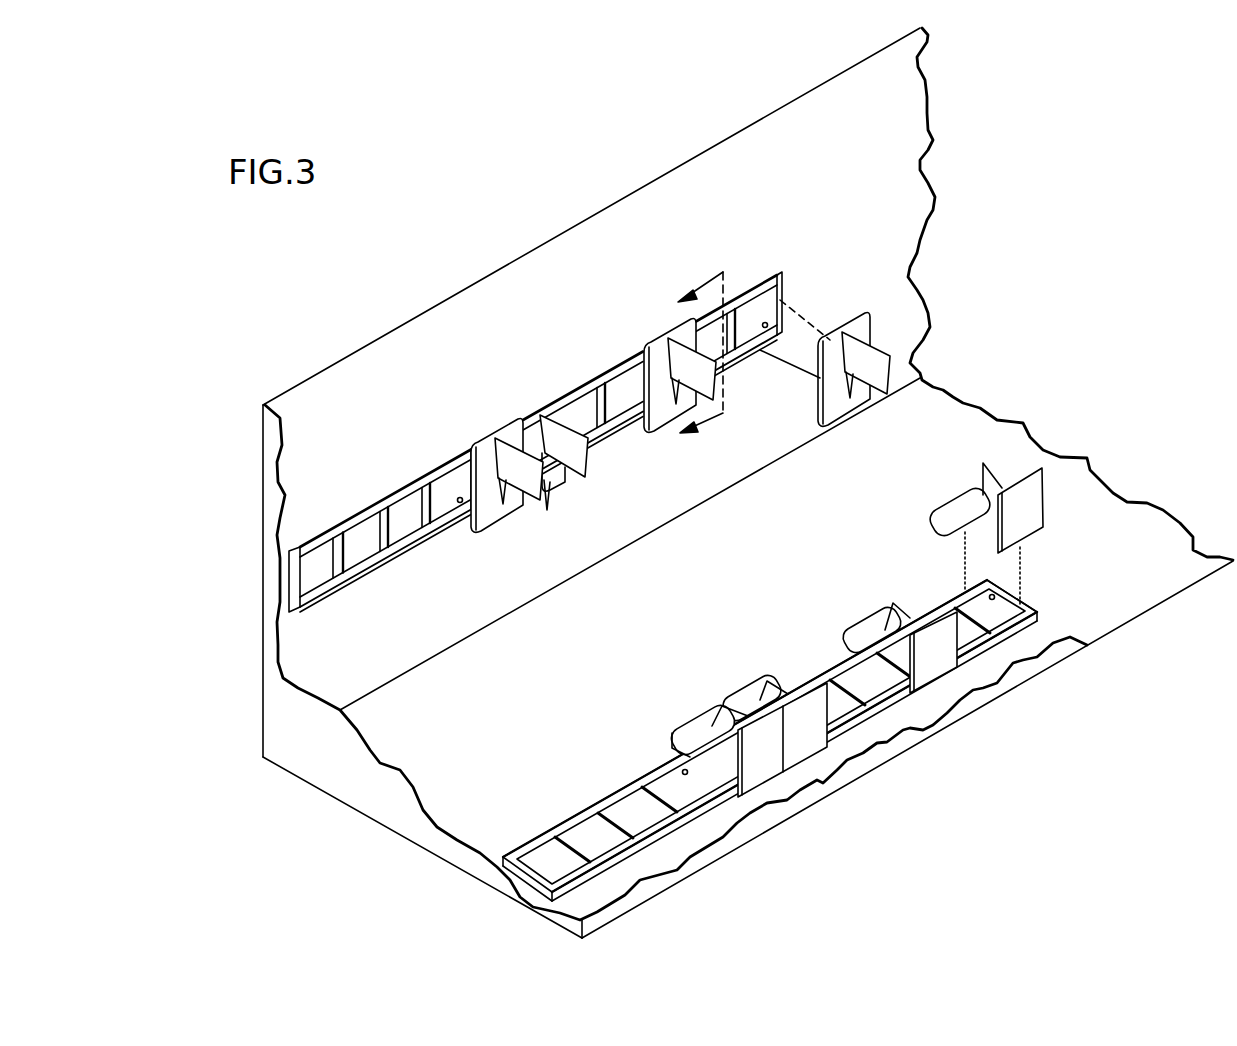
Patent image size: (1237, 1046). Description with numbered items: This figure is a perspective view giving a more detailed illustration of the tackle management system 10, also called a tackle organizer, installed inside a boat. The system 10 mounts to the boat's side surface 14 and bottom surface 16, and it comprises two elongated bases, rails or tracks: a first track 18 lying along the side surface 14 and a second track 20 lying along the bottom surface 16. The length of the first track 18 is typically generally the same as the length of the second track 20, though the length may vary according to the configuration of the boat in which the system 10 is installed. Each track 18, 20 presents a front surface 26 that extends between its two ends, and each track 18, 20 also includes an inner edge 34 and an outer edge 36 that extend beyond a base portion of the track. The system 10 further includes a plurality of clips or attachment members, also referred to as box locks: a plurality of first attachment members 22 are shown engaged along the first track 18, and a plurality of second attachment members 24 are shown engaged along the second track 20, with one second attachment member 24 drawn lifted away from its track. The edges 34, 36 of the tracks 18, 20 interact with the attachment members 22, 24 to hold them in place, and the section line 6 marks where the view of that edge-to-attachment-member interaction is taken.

The tackle management system 10 is at (300, 330).
The section line 6- 6 is at (699, 369).
The side surface 14 is at (594, 303).
The bottom surface 16 is at (732, 626).
The first track 18 is at (777, 277).
The second track 20 is at (1038, 610).
The first attachment members 22 is at (657, 424).
The second attachment members 24 is at (938, 665).
The front surface 26 is at (453, 465).
The inner edge 34 is at (432, 537).
The outer edge 36 is at (417, 478).